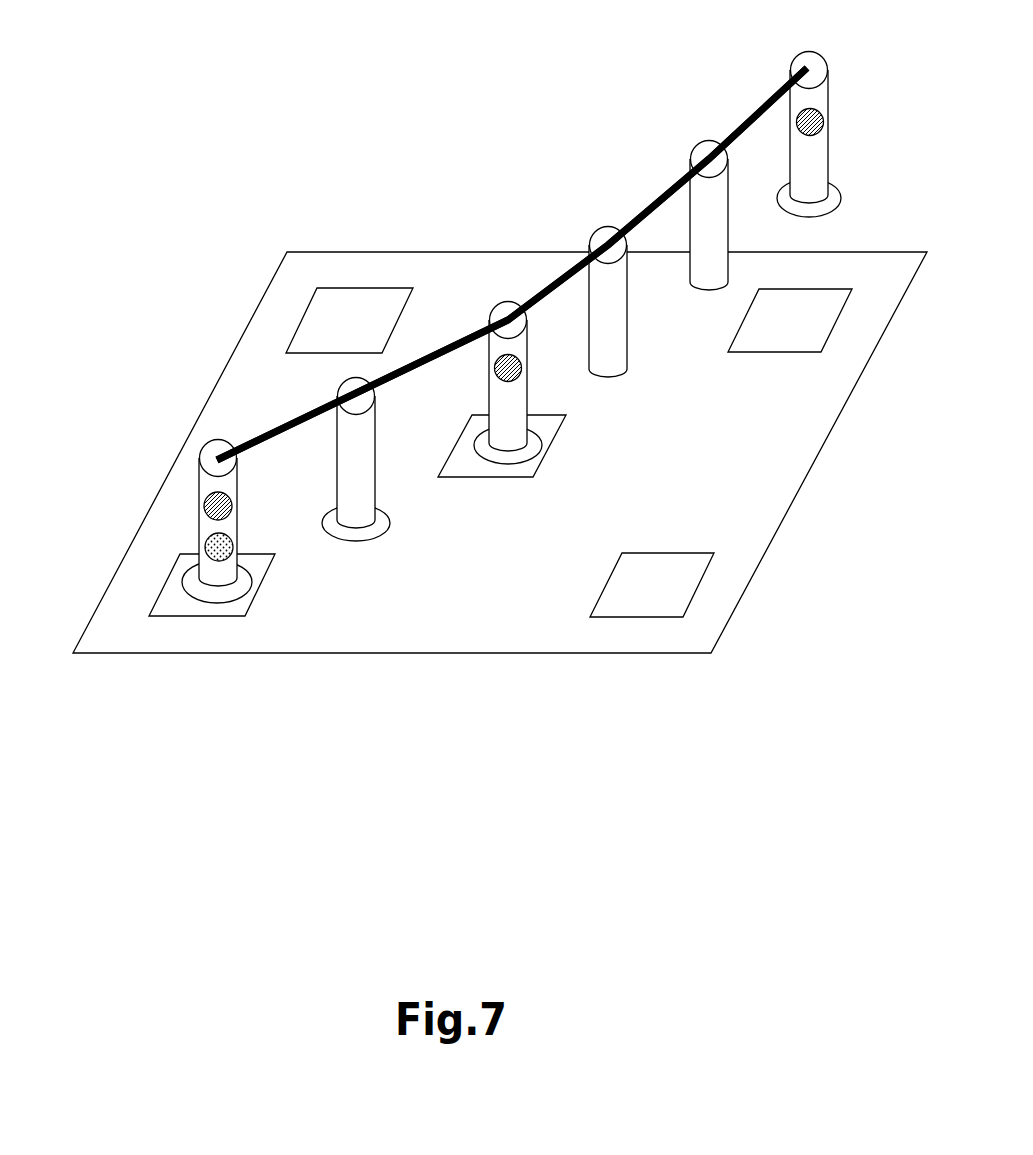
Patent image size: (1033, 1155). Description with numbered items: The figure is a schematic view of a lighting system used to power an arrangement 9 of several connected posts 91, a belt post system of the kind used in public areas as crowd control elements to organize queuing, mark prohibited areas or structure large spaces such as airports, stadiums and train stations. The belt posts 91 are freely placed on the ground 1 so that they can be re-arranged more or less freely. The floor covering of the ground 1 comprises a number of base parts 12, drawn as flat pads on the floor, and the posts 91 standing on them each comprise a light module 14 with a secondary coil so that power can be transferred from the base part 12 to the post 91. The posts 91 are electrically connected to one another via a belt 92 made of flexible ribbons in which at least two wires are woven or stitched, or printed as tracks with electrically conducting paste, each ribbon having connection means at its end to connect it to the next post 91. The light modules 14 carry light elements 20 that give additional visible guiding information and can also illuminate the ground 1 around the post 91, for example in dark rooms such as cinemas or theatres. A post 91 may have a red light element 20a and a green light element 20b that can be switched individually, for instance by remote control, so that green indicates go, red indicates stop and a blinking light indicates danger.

The ground 1 is at (537, 696).
The arrangement of posts 9 is at (460, 232).
The post 91 is at (718, 141).
The belt 92 is at (448, 346).
The base part 12 is at (350, 288).
The light module 14 is at (502, 458).
The light element 20 is at (823, 120).
The red light element 20a is at (207, 492).
The green light element 20b is at (205, 547).